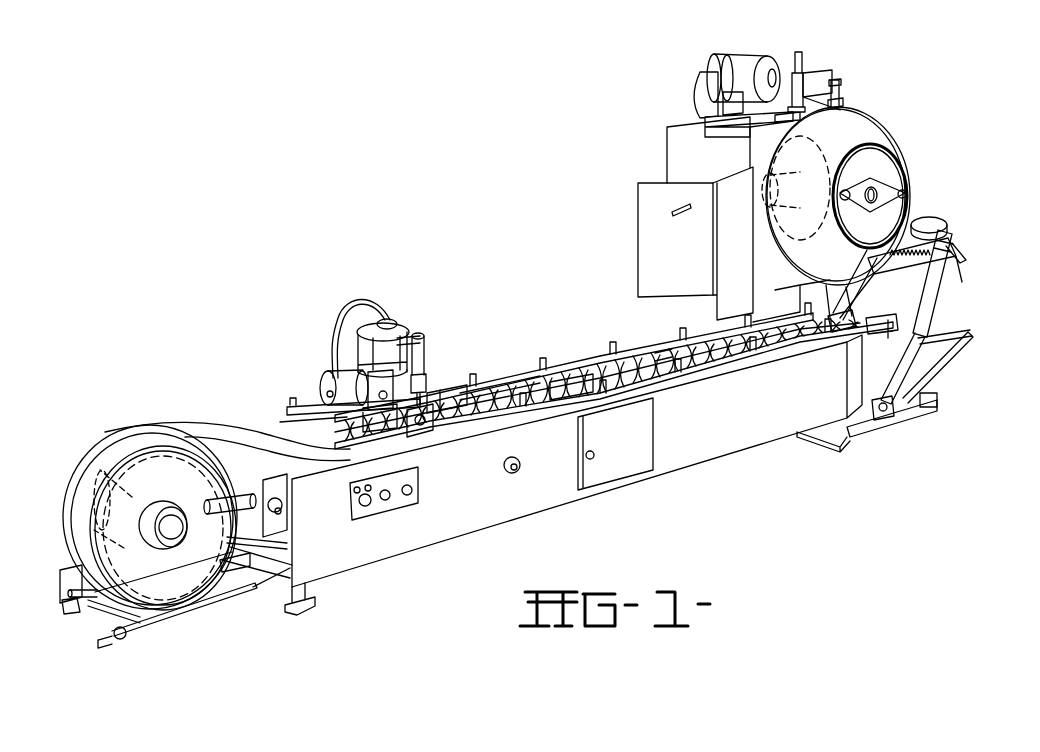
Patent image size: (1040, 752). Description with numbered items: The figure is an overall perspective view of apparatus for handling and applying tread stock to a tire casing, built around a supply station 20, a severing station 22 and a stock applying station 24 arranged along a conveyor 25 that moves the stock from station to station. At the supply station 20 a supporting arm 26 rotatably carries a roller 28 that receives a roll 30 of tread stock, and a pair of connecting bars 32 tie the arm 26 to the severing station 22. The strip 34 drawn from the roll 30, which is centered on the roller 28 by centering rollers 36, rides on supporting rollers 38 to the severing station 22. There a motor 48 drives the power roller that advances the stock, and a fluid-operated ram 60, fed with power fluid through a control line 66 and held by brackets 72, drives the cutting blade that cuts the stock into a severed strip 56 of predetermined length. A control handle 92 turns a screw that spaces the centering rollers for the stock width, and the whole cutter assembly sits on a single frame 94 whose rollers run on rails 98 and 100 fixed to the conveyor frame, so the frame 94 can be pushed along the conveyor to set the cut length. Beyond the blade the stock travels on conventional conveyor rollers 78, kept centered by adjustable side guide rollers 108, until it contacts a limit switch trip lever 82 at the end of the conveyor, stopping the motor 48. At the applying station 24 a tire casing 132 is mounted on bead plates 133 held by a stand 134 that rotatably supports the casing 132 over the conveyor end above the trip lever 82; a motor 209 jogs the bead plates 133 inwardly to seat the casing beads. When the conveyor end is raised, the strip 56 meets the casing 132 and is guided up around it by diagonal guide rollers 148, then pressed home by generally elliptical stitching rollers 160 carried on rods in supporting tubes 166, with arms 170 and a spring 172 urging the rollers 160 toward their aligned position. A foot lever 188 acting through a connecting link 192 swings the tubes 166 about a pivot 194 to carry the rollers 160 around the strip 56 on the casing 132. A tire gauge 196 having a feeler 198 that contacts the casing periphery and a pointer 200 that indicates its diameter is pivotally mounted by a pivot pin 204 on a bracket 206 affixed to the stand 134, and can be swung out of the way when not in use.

The supply station 20 is at (166, 416).
The severing station 22 is at (368, 361).
The stock applying station 24 is at (929, 314).
The conveyor 25 is at (614, 376).
The supporting arm 26 is at (157, 592).
The roller 28 is at (163, 540).
The roll of tread stock 30 is at (152, 517).
The connecting bars 32 is at (100, 612).
The strip 34 is at (269, 440).
The centering rollers 36 is at (222, 500).
The supporting rollers 38 is at (303, 462).
The motor 48 is at (344, 387).
The severed strip 56 is at (574, 380).
The fluid-operated ram 60 is at (370, 352).
The control line 66 is at (391, 318).
The brackets 72 is at (425, 364).
The conveyor rollers 78 is at (750, 356).
The limit switch trip lever 82 is at (838, 318).
The control handle 92 is at (438, 418).
The frame 94 is at (433, 386).
The rail 98 is at (530, 413).
The rail 100 is at (476, 393).
The side guide rollers 108 is at (665, 365).
The tire casing 132 is at (860, 212).
The bead plates 133 is at (908, 168).
The stand 134 is at (676, 316).
The diagonal guide rollers 148 is at (870, 325).
The stitching rollers 160 is at (921, 216).
The supporting tubes 166 is at (930, 298).
The arms 170 is at (963, 262).
The spring 172 is at (936, 243).
The foot lever 188 is at (950, 372).
The connecting link 192 is at (945, 341).
The pivot 194 is at (892, 410).
The tire gauge 196 is at (847, 78).
The feeler 198 is at (842, 106).
The pointer 200 is at (812, 80).
The pivot pin 204 is at (836, 76).
The bracket 206 is at (846, 96).
The motor 209 is at (758, 38).